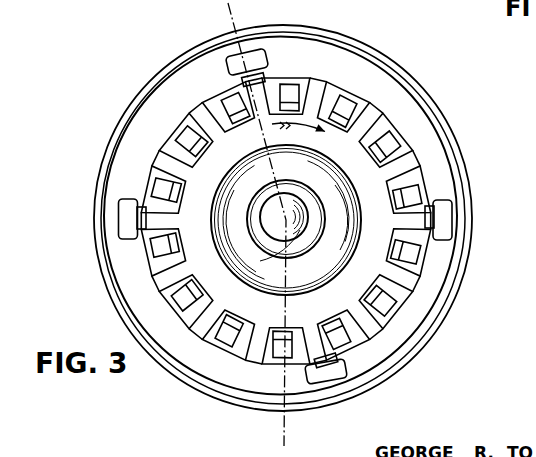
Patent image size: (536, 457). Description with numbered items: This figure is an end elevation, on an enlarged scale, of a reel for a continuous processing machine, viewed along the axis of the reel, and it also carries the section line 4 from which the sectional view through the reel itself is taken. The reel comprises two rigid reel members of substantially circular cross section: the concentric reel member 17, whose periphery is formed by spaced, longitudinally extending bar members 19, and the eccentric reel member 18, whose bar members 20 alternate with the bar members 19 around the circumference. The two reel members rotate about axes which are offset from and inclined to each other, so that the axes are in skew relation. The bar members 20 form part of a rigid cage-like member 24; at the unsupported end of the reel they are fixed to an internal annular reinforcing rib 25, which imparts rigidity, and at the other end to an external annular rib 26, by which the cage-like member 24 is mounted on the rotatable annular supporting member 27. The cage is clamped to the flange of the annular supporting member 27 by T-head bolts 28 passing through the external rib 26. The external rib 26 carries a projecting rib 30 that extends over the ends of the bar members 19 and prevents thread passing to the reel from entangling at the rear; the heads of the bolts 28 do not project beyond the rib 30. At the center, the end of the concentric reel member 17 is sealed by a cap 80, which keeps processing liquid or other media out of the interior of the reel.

The section line 4— 4 is at (305, 443).
The concentric reel member 17 is at (401, 185).
The eccentric reel member 18 is at (407, 112).
The bar members 19 is at (435, 189).
The bar members 20 is at (417, 150).
The cage-like member 24 is at (433, 288).
The internal annular reinforcing rib 25 is at (339, 280).
The external annular rib 26 is at (392, 343).
The annular supporting member 27 is at (392, 383).
The T-head bolts 28 is at (444, 228).
The projecting rib 30 is at (455, 265).
The cap 80 is at (273, 228).